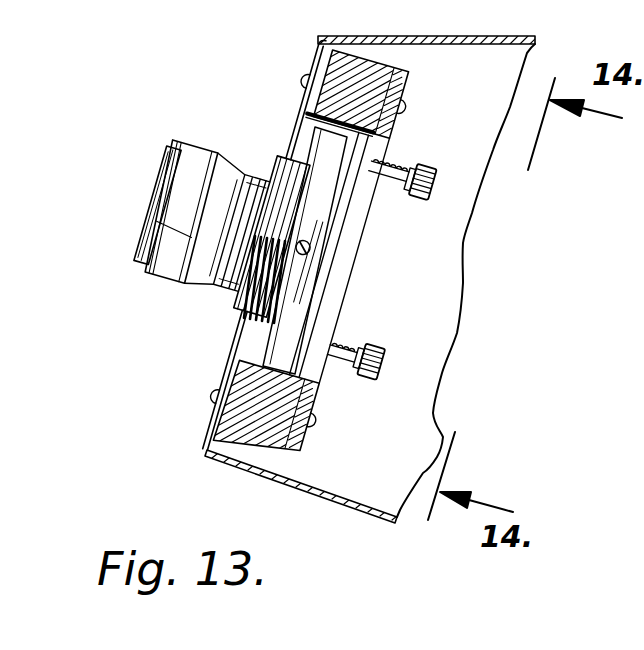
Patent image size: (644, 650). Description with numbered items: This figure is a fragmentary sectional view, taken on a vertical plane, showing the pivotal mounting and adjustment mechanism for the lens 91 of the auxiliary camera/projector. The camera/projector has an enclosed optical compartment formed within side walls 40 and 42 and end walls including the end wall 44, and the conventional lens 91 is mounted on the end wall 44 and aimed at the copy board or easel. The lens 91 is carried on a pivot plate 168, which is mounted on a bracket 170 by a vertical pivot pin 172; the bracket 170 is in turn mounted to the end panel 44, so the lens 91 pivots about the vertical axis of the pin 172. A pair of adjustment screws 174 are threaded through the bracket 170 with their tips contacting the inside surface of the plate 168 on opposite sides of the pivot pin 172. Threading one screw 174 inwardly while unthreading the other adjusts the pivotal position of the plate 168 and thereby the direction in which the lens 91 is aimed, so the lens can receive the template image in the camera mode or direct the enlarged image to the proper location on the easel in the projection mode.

The side wall 40 is at (487, 33).
The side wall 42 is at (347, 507).
The end wall 44 is at (212, 438).
The lens 91 is at (163, 277).
The pivot plate 168 is at (290, 297).
The bracket 170 is at (358, 62).
The pivot pin 172 is at (310, 247).
The adjustment screws 174 is at (425, 167).